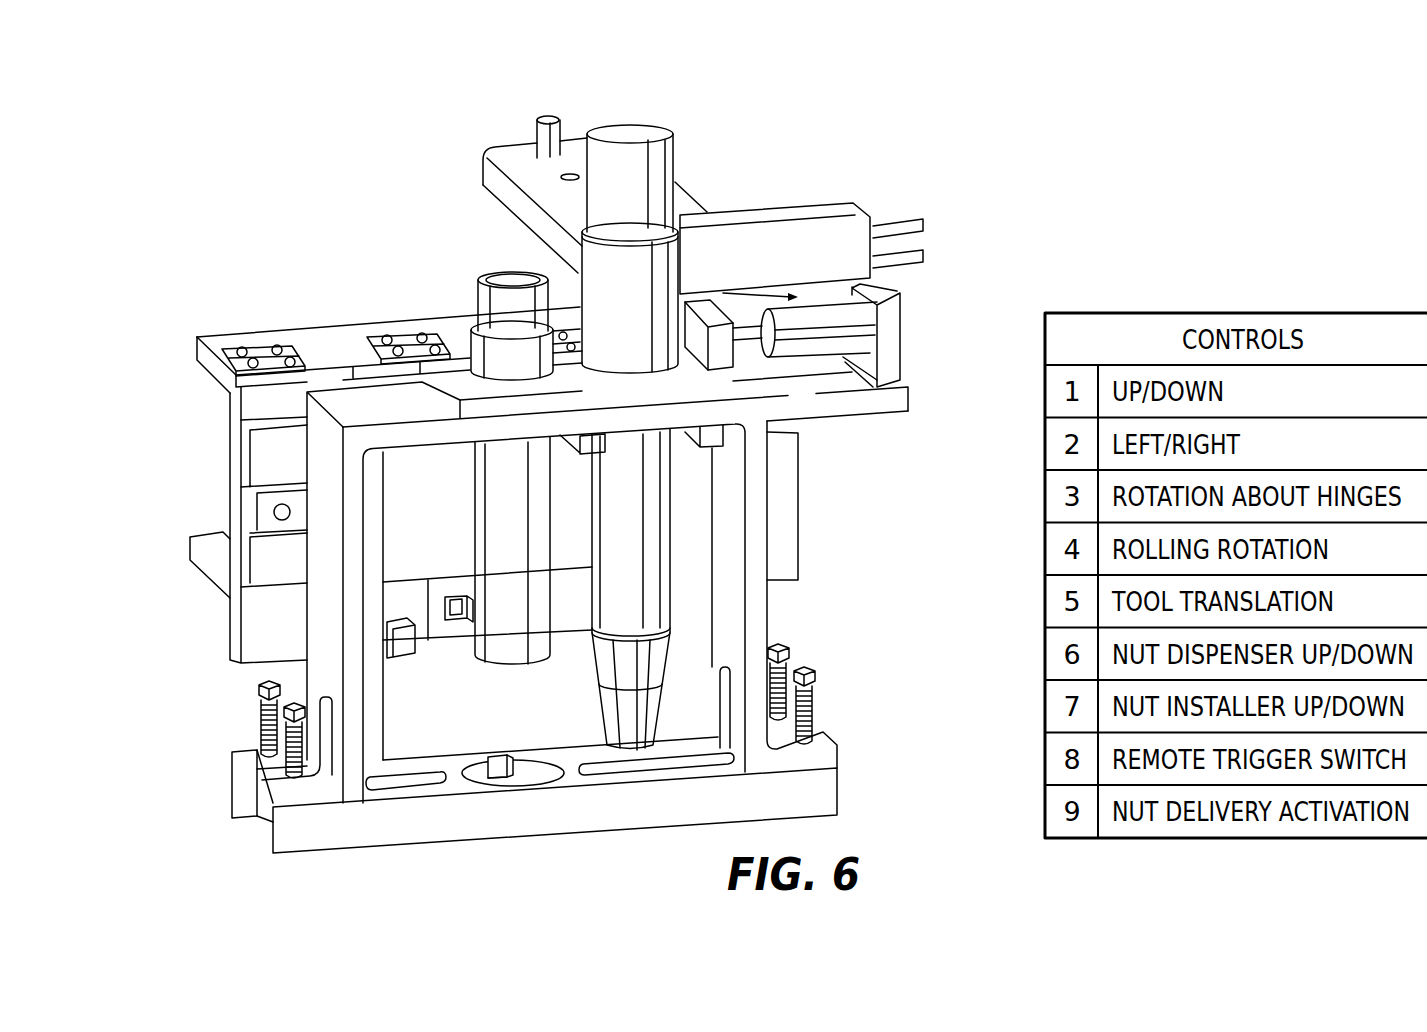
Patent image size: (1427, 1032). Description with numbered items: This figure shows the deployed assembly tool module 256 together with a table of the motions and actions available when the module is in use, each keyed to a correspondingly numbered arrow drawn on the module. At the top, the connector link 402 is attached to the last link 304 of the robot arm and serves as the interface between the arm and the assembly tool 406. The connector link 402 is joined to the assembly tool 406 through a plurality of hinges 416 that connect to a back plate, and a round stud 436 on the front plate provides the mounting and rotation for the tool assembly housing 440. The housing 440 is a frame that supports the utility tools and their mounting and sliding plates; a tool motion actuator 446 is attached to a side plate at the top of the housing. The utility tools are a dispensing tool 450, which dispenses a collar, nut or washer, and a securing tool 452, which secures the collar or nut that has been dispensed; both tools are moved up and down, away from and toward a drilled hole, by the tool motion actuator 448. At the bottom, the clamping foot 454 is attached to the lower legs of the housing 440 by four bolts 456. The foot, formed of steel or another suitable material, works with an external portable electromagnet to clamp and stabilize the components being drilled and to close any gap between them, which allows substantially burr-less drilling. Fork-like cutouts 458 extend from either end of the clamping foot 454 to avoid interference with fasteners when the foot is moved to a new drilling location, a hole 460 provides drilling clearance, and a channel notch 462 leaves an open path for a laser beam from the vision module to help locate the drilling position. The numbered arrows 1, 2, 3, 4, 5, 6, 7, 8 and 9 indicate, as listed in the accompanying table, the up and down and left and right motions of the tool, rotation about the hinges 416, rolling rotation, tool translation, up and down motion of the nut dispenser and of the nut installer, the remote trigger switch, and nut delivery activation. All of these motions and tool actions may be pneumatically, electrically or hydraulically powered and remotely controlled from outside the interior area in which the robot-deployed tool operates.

The assembly tool module 256 is at (388, 103).
The last link 304 is at (500, 139).
The connector link 402 is at (323, 320).
The assembly tool 406 is at (755, 503).
The hinges 416 is at (258, 346).
The round stud 436 is at (747, 322).
The tool assembly housing 440 is at (327, 615).
The tool motion actuator 446 is at (863, 332).
The tool motion actuator 448 is at (620, 247).
The dispensing tool 450 is at (465, 293).
The securing tool 452 is at (673, 150).
The clamping foot 454 is at (398, 843).
The bolts 456 is at (257, 694).
The fork-like cutouts 458 is at (252, 833).
The hole 460 is at (538, 770).
The channel notch 462 is at (493, 755).
The up/down arrow 1 is at (195, 395).
The left/right arrow 2 is at (215, 249).
The rotation about hinges arrow 3 is at (142, 531).
The rolling rotation arrow 4 is at (899, 450).
The tool translation arrow 5 is at (835, 374).
The nut dispenser up/down arrow 6 is at (510, 360).
The nut installer up/down arrow 7 is at (630, 295).
The remote trigger switch 8 is at (801, 233).
The nut delivery activation 9 is at (513, 285).